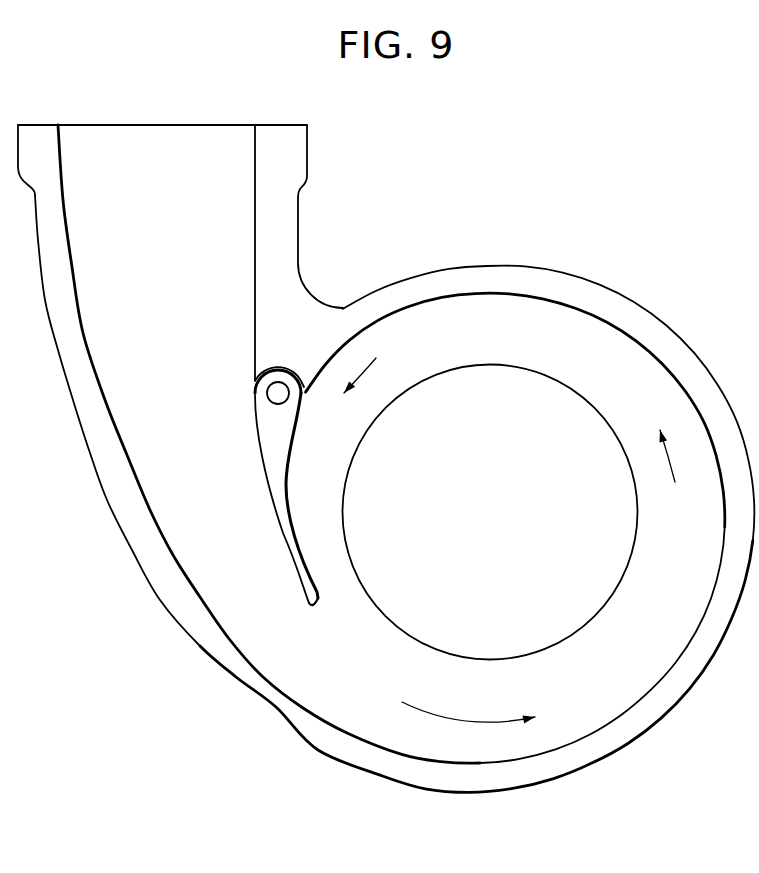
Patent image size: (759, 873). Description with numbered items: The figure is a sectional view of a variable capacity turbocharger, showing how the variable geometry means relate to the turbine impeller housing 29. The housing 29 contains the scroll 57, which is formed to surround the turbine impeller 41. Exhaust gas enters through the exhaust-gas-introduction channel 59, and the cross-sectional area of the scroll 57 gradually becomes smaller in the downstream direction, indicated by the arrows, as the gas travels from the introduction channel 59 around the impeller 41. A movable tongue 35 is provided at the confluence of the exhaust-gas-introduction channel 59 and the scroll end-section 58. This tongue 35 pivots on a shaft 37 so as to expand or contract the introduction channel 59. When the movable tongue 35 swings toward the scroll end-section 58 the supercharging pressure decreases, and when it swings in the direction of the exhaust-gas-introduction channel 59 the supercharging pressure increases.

The turbine impeller housing 29 is at (653, 316).
The movable tongue 35 is at (281, 513).
The shaft 37 is at (279, 392).
The turbine impeller 41 is at (482, 514).
The scroll 57 is at (633, 626).
The scroll end-section 58 is at (317, 581).
The exhaust-gas-introduction channel 59 is at (192, 532).